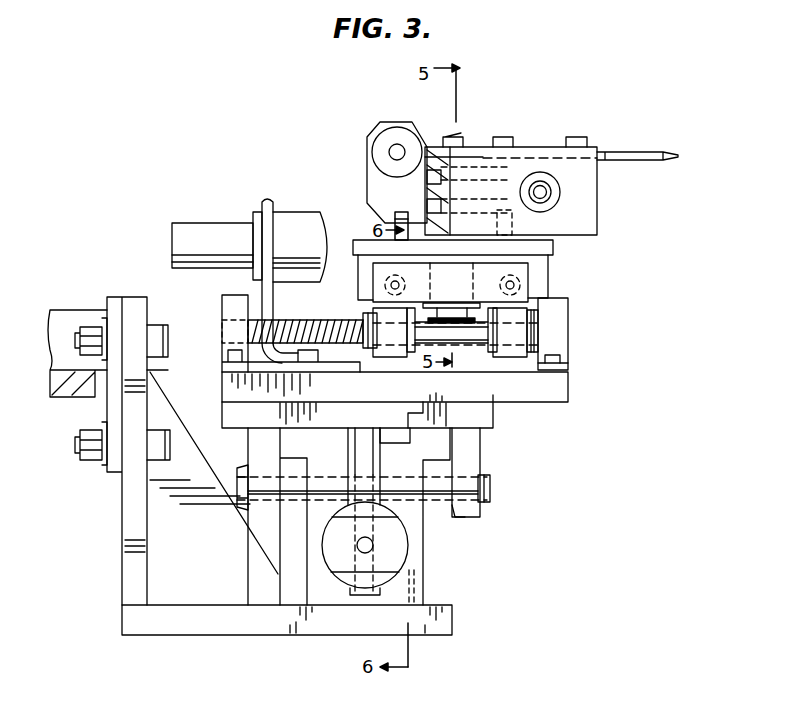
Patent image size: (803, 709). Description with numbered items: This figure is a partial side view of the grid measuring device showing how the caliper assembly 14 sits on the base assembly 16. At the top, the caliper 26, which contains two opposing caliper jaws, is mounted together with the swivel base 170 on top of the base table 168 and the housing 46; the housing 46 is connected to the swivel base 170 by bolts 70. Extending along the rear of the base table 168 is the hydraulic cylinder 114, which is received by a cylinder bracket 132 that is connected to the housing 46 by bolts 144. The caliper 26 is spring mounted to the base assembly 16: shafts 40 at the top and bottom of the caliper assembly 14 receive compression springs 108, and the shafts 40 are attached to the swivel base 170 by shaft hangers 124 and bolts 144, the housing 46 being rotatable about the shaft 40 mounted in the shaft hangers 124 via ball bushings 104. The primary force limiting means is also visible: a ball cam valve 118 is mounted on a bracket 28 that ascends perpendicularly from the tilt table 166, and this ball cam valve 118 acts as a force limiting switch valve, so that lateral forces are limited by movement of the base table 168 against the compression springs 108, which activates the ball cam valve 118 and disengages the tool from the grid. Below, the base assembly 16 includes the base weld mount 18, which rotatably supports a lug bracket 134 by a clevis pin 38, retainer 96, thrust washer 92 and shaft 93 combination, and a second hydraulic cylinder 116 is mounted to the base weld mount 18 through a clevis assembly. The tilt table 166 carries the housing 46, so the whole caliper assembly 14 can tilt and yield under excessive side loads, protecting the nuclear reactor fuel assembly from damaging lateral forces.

The caliper assembly 14 is at (602, 116).
The base assembly 16 is at (236, 656).
The base weld mount 18 is at (167, 628).
The caliper 26 is at (637, 149).
The bracket 28 is at (190, 233).
The clevis pin 38 is at (483, 472).
The shafts 40 is at (560, 333).
The housing 46 is at (373, 270).
The bolts 70 is at (506, 136).
The thrust washer 92 is at (456, 517).
The shaft 93 is at (390, 485).
The retainer 96 is at (491, 490).
The ball bushings 104 is at (541, 299).
The compression springs 108 is at (300, 321).
The hydraulic cylinder 114 is at (400, 133).
The second hydraulic cylinder 116 is at (330, 562).
The ball cam valve 118 is at (268, 199).
The shaft hangers 124 is at (565, 309).
The cylinder bracket 132 is at (373, 136).
The lug bracket 134 is at (493, 420).
The bolts 144 is at (427, 177).
The tilt table 166 is at (558, 386).
The base table 168 is at (556, 250).
The swivel base 170 is at (592, 200).